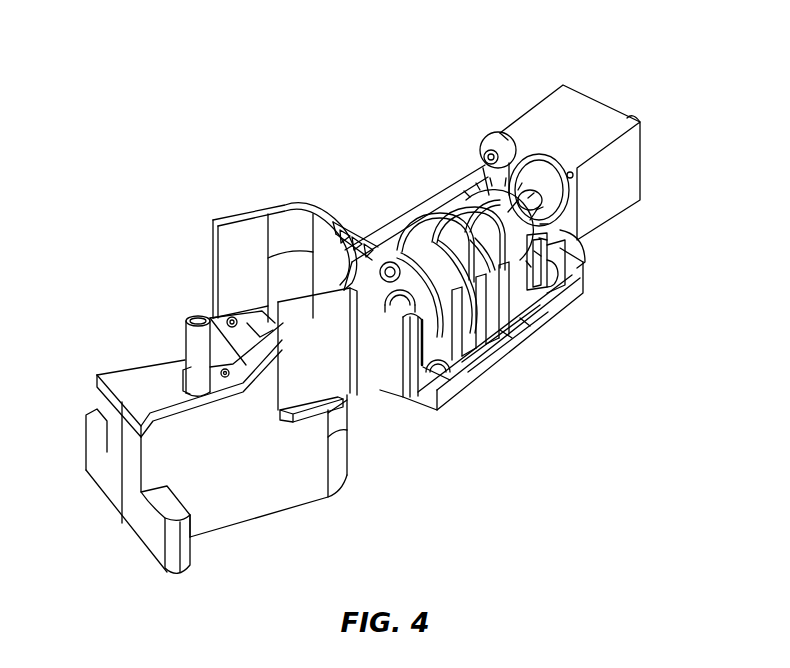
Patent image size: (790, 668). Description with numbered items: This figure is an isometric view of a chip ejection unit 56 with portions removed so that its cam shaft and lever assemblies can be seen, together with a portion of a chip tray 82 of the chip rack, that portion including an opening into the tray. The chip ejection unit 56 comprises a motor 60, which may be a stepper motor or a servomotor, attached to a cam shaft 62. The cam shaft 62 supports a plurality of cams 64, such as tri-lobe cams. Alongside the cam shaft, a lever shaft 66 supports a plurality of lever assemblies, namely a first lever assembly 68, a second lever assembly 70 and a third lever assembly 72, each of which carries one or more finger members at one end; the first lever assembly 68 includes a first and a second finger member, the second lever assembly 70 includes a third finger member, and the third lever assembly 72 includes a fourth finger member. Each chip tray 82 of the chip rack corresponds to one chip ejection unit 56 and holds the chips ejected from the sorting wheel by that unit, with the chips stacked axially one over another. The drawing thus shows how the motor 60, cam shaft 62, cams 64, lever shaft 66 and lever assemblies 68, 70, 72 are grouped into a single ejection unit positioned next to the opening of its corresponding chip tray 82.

The chip ejection unit 56 is at (504, 259).
The motor 60 is at (587, 117).
The cam shaft 62 is at (418, 279).
The cams 64 is at (400, 220).
The lever shaft 66 is at (460, 377).
The first lever assembly 68 is at (522, 300).
The second lever assembly 70 is at (523, 325).
The third lever assembly 72 is at (520, 346).
The chip tray 82 is at (168, 312).